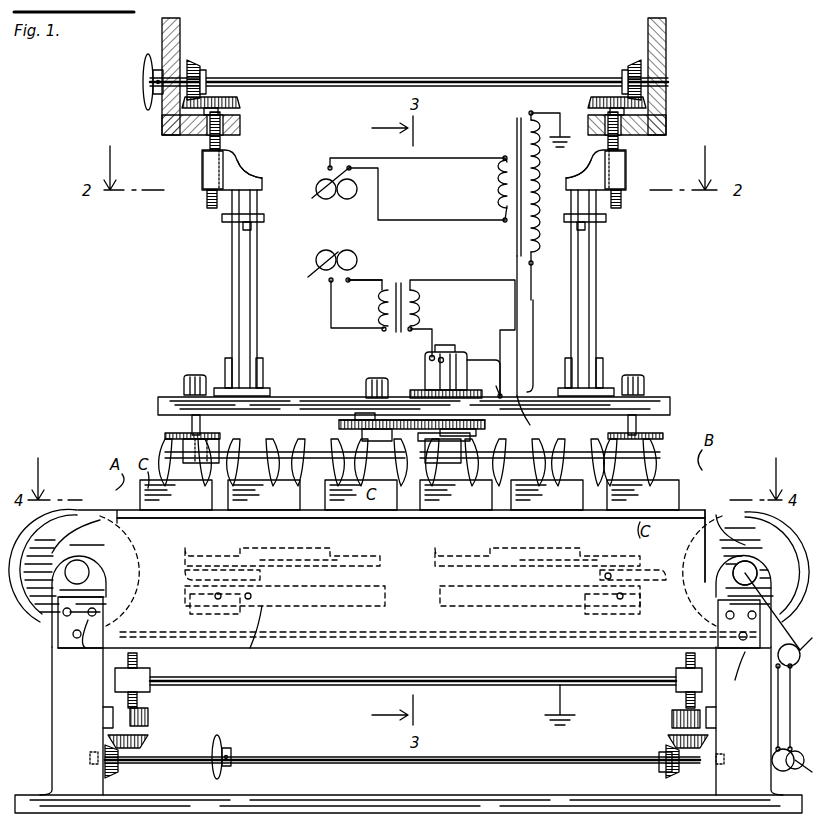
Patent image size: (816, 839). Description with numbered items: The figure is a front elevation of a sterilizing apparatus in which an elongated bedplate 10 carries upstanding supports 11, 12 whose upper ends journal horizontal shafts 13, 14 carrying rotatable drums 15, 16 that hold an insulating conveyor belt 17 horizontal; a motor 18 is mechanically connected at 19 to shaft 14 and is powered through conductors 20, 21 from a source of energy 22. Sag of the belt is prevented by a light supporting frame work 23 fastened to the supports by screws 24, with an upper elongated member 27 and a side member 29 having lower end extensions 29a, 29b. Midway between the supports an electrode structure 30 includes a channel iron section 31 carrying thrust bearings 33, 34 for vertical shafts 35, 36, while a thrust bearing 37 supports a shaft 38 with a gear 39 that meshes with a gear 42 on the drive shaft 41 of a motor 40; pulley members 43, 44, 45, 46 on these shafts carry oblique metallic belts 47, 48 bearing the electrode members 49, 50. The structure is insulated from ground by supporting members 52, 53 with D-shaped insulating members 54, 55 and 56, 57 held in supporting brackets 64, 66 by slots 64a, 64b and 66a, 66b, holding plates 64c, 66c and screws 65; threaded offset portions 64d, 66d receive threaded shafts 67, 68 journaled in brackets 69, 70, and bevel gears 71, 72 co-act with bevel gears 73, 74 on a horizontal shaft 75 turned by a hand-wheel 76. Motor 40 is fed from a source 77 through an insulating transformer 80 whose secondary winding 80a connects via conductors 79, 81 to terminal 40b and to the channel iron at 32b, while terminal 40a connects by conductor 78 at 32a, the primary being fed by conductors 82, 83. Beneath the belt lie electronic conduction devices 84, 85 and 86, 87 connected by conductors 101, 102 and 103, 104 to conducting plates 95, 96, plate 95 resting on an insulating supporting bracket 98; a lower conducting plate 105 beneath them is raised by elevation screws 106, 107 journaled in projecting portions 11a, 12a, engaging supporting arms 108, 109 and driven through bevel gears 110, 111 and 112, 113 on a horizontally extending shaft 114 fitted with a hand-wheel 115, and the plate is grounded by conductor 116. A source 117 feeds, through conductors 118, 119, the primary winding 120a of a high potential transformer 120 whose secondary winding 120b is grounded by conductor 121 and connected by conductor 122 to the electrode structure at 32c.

The bedplate 10 is at (370, 800).
The upstanding support 11 is at (52, 716).
The projecting portion 11a is at (148, 718).
The upstanding support 12 is at (740, 790).
The projecting portion 12a is at (672, 720).
The shaft 13 is at (78, 570).
The shaft 14 is at (748, 570).
The rotatable drum 15 is at (76, 522).
The rotatable drum 16 is at (728, 520).
The conveyor belt 17 is at (706, 510).
The motor 18 is at (780, 650).
The mechanical connection 19 is at (754, 586).
The conductor 20 is at (778, 722).
The conductor 21 is at (790, 744).
The source of energy 22 is at (784, 772).
The supporting frame work 23 is at (412, 658).
The screws 24 is at (74, 634).
The upper elongated member 27 is at (396, 518).
The side member 29 is at (430, 632).
The lower longitudinal end extension 29a is at (746, 656).
The lower longitudinal end extension 29b is at (86, 648).
The electrode structure 30 is at (393, 371).
The channel iron section 31 is at (160, 402).
The connection point 32a is at (500, 394).
The connection point 32b is at (538, 416).
The connection point 32c is at (546, 375).
The thrust bearing 33 is at (194, 375).
The thrust bearing 34 is at (634, 375).
The shaft 35 is at (192, 425).
The shaft 36 is at (636, 427).
The thrust bearing 37 is at (374, 378).
The shaft 38 is at (377, 439).
The gear 39 is at (366, 420).
The motor 40 is at (432, 372).
The motor terminal 40a is at (444, 359).
The motor terminal 40b is at (434, 356).
The motor drive shaft 41 is at (458, 441).
The gear 42 is at (468, 420).
The pulley member 43 is at (165, 436).
The pulley member 44 is at (652, 436).
The pulley member 45 is at (340, 426).
The pulley member 46 is at (476, 434).
The metallic belt 47 is at (275, 450).
The metallic belt 48 is at (583, 450).
The electrode members 49 is at (296, 466).
The electrode members 50 is at (578, 472).
The supporting member 52 is at (213, 293).
The supporting member 53 is at (603, 293).
The insulating member 54 is at (232, 292).
The insulating member 55 is at (256, 292).
The insulating member 56 is at (596, 294).
The insulating member 57 is at (570, 298).
The supporting bracket 64 is at (236, 170).
The slot 64a is at (228, 212).
The slot 64b is at (260, 182).
The holding plate 64c is at (264, 218).
The offset portion 64d is at (206, 168).
The screw 65 is at (250, 230).
The supporting bracket 66 is at (592, 175).
The slot 66a is at (600, 212).
The slot 66b is at (568, 182).
The holding plate 66c is at (566, 220).
The offset portion 66d is at (622, 168).
The threaded shaft 67 is at (209, 143).
The threaded shaft 68 is at (619, 143).
The bracket 69 is at (163, 124).
The bracket 70 is at (667, 128).
The bevel gear 71 is at (240, 103).
The bevel gear 72 is at (650, 103).
The bevel gear 73 is at (195, 62).
The bevel gear 74 is at (630, 62).
The horizontal shaft 75 is at (340, 78).
The hand-wheel 76 is at (145, 80).
The source of current 77 is at (332, 255).
The conductor 78 is at (484, 360).
The conductor 79 is at (434, 328).
The insulating transformer 80 is at (404, 292).
The secondary transformer winding 80a is at (383, 296).
The conductor 81 is at (492, 280).
The conductor 82 is at (331, 300).
The conductor 83 is at (378, 272).
The electronic conduction device 84 is at (230, 556).
The electronic conduction device 85 is at (332, 558).
The electronic conduction device 86 is at (484, 558).
The electronic conduction device 87 is at (586, 558).
The conducting plate 95 is at (190, 602).
The conducting plate 96 is at (640, 602).
The insulating supporting bracket 98 is at (248, 648).
The conductor 101 is at (184, 570).
The conductor 102 is at (300, 606).
The conductor 103 is at (540, 606).
The conductor 104 is at (632, 572).
The lower conducting plate 105 is at (298, 685).
The elevation screw 106 is at (137, 700).
The elevation screw 107 is at (686, 700).
The supporting arm 108 is at (148, 676).
The supporting arm 109 is at (672, 676).
The bevel gear 110 is at (146, 742).
The bevel gear 111 is at (672, 742).
The bevel gear 112 is at (116, 770).
The bevel gear 113 is at (672, 772).
The horizontally extending shaft 114 is at (494, 763).
The hand wheel 115 is at (226, 750).
The conductor 116 is at (556, 712).
The source of electrical energy 117 is at (338, 198).
The conductor 118 is at (468, 158).
The conductor 119 is at (424, 220).
The high potential transformer 120 is at (520, 118).
The primary winding 120a is at (503, 188).
The high potential secondary winding 120b is at (536, 266).
The conductor 121 is at (550, 113).
The conductor 122 is at (524, 340).